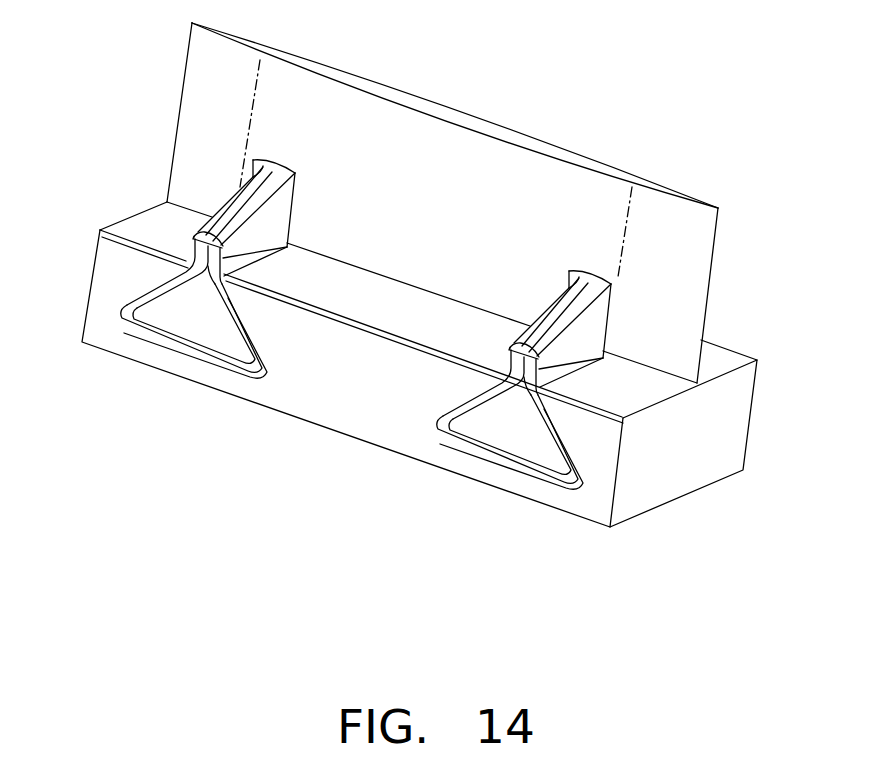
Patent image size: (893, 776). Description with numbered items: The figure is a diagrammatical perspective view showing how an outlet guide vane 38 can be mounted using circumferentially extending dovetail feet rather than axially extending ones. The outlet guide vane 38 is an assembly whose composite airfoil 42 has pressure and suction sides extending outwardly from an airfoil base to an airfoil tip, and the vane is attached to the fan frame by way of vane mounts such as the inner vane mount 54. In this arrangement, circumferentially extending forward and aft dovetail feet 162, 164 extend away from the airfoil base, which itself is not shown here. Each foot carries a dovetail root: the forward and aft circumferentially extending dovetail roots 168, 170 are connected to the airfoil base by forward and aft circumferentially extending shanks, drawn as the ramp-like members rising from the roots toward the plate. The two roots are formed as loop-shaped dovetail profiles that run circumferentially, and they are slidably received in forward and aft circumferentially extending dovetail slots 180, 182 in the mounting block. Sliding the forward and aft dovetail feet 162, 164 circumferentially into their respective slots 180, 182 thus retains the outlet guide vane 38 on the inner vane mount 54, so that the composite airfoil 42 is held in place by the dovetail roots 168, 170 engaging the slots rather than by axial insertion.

The outlet guide vane 38 is at (543, 182).
The composite airfoil 42 is at (438, 112).
The inner vane mount 54 is at (713, 352).
The forward dovetail foot 162 is at (190, 268).
The aft dovetail foot 164 is at (519, 371).
The forward dovetail root 168 is at (196, 332).
The aft dovetail root 170 is at (489, 452).
The forward dovetail slot 180 is at (170, 296).
The aft dovetail slot 182 is at (457, 381).